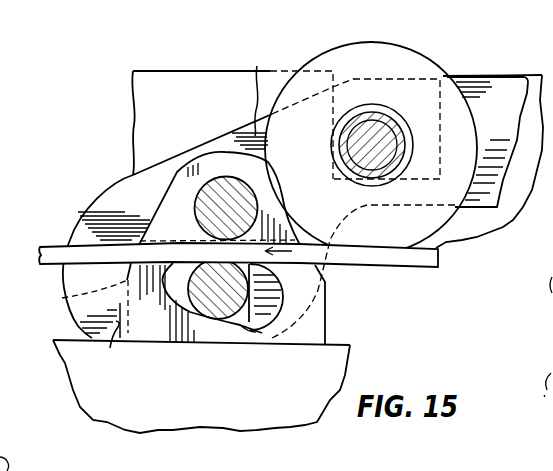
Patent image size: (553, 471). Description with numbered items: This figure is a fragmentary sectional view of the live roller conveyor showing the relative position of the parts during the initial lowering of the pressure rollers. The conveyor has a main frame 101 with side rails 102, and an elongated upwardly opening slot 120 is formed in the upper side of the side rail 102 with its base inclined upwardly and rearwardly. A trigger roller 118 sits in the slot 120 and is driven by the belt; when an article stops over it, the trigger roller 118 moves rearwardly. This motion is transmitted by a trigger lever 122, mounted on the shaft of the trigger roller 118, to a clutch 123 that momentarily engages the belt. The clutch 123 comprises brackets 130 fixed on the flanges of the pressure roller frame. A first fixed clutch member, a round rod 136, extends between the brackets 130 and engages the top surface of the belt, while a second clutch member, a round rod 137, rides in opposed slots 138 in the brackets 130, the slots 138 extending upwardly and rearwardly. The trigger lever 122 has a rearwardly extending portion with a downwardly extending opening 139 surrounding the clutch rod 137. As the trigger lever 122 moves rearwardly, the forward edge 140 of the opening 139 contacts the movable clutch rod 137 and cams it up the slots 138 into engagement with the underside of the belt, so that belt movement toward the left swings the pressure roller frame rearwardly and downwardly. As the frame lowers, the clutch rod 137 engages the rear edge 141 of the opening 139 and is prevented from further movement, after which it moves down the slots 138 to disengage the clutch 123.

The main frame 101 is at (147, 86).
The side rail 102 is at (143, 114).
The trigger roller 118 is at (395, 58).
The slot 120 is at (423, 92).
The trigger lever 122 is at (257, 66).
The clutch 123 is at (132, 206).
The bracket 130 is at (328, 317).
The round rod 136 is at (218, 185).
The round rod 137 is at (208, 313).
The slot 138 is at (268, 330).
The opening 139 is at (63, 298).
The forward edge 140 is at (247, 333).
The rear edge 141 is at (110, 348).